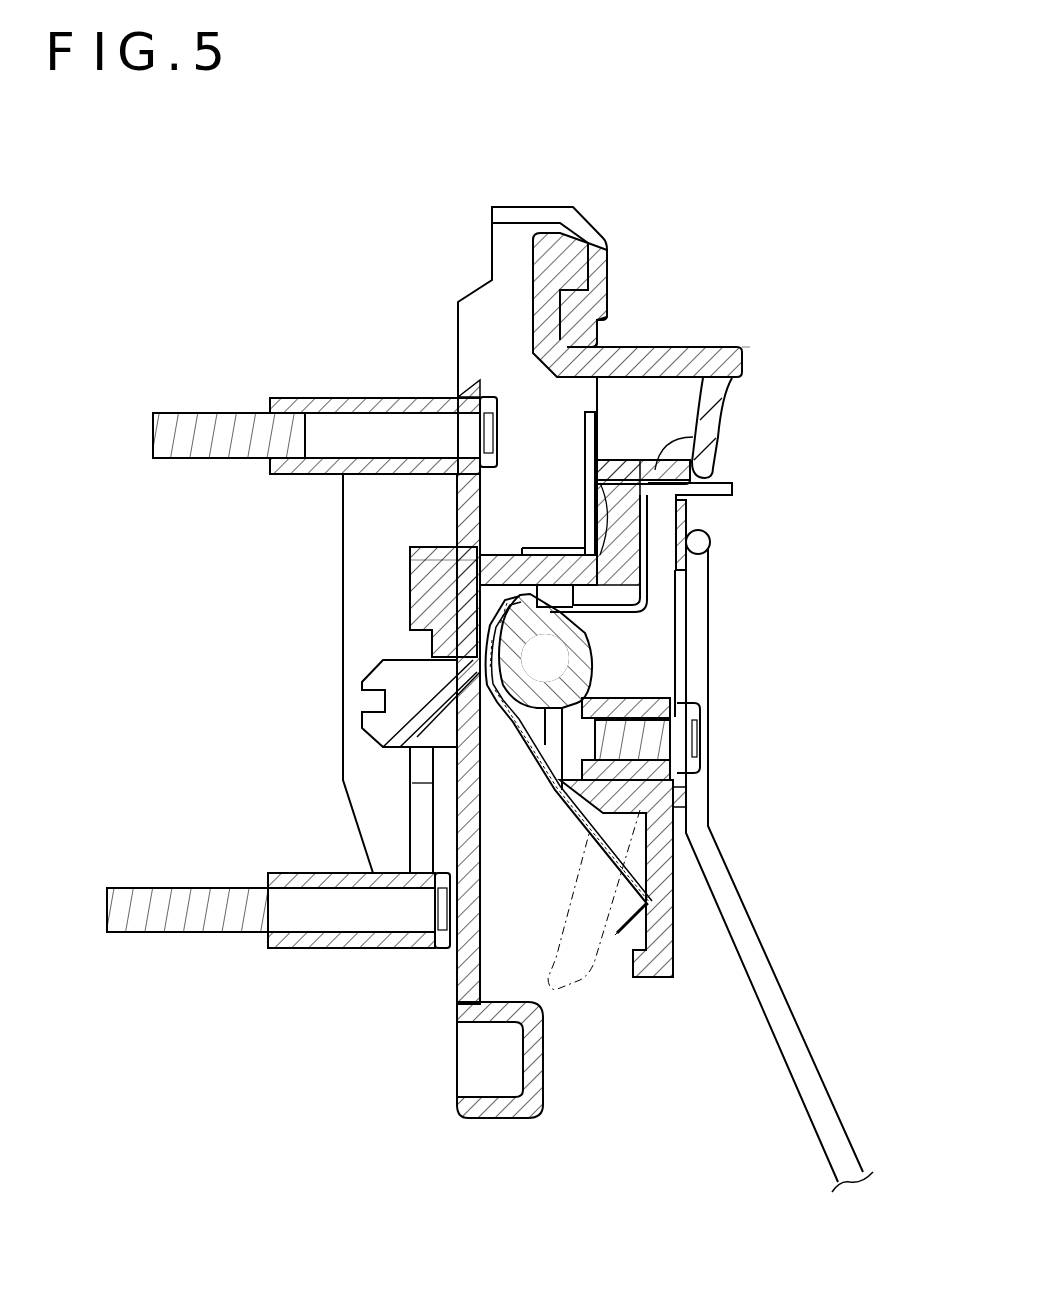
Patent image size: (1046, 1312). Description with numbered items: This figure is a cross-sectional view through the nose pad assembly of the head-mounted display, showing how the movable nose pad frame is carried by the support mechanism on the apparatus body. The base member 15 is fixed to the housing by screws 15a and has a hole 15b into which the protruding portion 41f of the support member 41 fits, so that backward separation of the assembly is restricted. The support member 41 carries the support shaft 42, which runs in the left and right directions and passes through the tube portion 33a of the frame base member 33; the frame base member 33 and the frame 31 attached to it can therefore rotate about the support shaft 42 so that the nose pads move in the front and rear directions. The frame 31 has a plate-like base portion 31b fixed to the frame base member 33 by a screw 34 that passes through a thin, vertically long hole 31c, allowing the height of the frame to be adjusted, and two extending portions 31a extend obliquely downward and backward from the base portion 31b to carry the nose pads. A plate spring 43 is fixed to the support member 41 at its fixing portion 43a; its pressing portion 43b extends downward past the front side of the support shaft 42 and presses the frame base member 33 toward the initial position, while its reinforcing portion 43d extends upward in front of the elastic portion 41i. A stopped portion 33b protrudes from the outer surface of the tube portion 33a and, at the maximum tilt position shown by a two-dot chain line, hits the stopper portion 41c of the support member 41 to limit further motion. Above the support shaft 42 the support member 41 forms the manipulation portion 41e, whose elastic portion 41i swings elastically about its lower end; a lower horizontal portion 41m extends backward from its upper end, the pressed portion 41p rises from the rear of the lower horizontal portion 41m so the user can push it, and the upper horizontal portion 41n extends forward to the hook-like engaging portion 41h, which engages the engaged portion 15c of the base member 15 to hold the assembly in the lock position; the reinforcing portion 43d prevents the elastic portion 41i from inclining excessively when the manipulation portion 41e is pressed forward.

The base member 15 is at (499, 196).
The screws 15a is at (345, 420).
The hole 15b is at (415, 830).
The engaged portion 15c is at (572, 298).
The support member 41 is at (552, 465).
The stopper portion 41c is at (600, 595).
The manipulation portion 41e is at (787, 306).
The protruding portion 41f is at (383, 700).
The engaging portion 41h is at (585, 262).
The elastic portion 41i is at (690, 508).
The lower horizontal portion 41m is at (675, 440).
The upper horizontal portion 41n is at (660, 362).
The pressed portion 41p is at (708, 398).
The support shaft 42 is at (597, 652).
The plate spring 43 is at (569, 701).
The fixing portion 43a is at (528, 546).
The pressing portion 43b is at (572, 820).
The reinforcing portion 43d is at (583, 445).
The frame base member 33 is at (538, 725).
The tube portion 33a is at (380, 738).
The stopped portion 33b is at (445, 600).
The frame 31 is at (773, 861).
The extending portions 31a is at (753, 970).
The base portion 31b is at (686, 798).
The hole 31c is at (690, 660).
The screw 34 is at (680, 737).